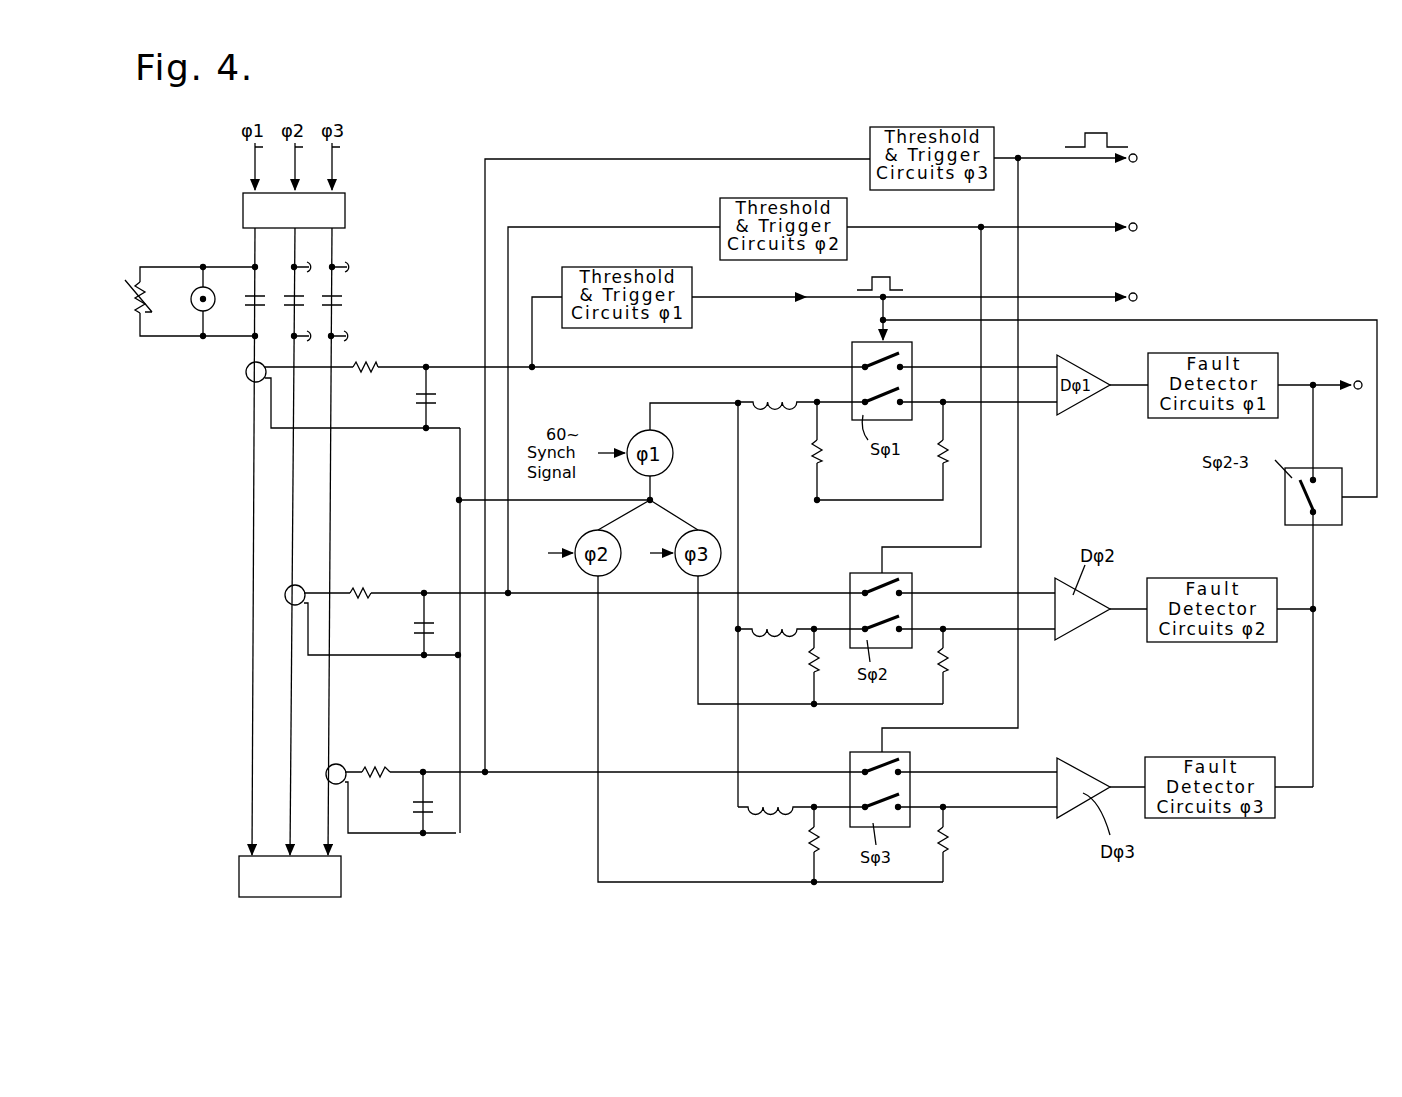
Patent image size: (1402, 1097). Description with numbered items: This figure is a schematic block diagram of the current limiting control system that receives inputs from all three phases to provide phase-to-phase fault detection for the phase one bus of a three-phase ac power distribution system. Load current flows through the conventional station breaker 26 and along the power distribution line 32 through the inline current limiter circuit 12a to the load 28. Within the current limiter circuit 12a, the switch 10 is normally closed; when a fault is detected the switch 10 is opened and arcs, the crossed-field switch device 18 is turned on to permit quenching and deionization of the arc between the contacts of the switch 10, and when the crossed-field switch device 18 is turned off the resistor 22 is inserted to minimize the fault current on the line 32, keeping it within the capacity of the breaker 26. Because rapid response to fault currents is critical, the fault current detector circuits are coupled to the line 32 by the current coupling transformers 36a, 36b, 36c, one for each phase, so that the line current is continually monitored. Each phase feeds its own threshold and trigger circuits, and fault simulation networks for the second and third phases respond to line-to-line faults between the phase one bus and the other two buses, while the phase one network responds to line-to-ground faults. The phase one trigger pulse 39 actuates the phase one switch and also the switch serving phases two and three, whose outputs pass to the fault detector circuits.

The current limiter circuit 12a is at (171, 288).
The resistor 22 is at (133, 307).
The crossed-field switch device 18 is at (213, 306).
The switch 10 is at (258, 295).
The station breaker 26 is at (340, 227).
The power distribution line 32 is at (253, 498).
The current coupling transformer 36a is at (247, 374).
The current coupling transformer 36b is at (300, 582).
The current coupling transformer 36c is at (342, 765).
The load 28 is at (245, 888).
The trigger pulse 39 is at (1108, 143).